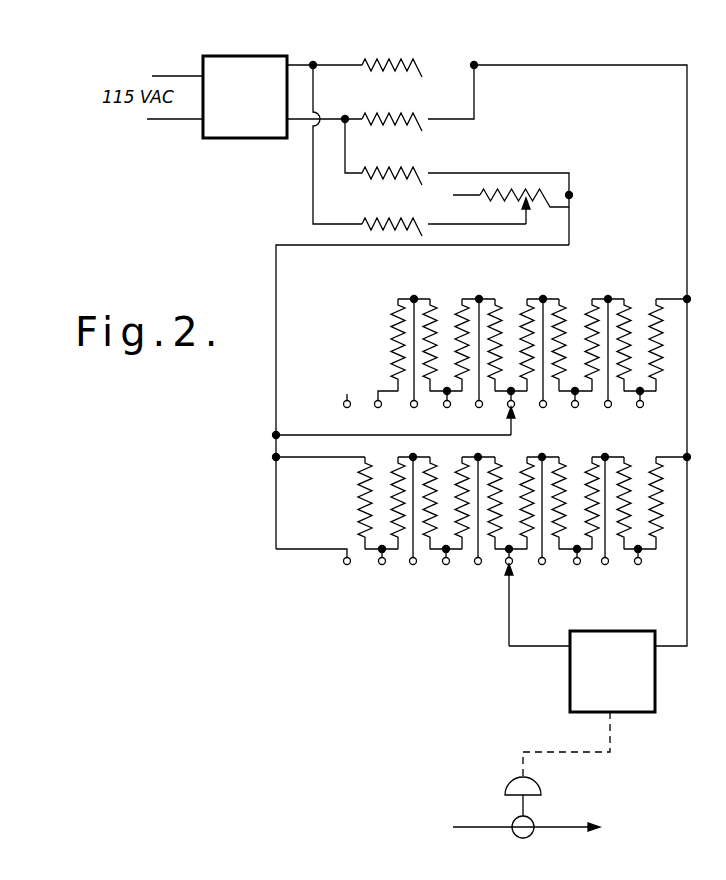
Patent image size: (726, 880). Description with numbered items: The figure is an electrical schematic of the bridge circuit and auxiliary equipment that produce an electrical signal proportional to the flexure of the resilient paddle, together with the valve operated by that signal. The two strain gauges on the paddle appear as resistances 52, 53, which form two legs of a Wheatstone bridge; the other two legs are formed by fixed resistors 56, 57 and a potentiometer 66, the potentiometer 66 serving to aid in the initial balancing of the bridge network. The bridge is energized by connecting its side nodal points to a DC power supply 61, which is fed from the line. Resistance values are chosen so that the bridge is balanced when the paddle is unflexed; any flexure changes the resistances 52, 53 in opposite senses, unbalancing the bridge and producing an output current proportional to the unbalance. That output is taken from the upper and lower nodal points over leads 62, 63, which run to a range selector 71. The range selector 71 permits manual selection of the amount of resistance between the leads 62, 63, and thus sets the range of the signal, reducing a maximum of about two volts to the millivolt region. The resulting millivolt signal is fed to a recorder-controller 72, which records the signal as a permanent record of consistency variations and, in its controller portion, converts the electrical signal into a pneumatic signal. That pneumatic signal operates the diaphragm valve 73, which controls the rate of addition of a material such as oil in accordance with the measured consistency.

The resistance 52 is at (393, 62).
The resistance 53 is at (395, 117).
The fixed resistor 56 is at (399, 221).
The fixed resistor 57 is at (399, 170).
The DC power supply 61 is at (250, 105).
The lead 62 is at (608, 63).
The lead 63 is at (348, 247).
The potentiometer 66 is at (496, 192).
The range selector 71 is at (584, 441).
The recorder-controller 72 is at (622, 678).
The diaphragm valve 73 is at (540, 808).